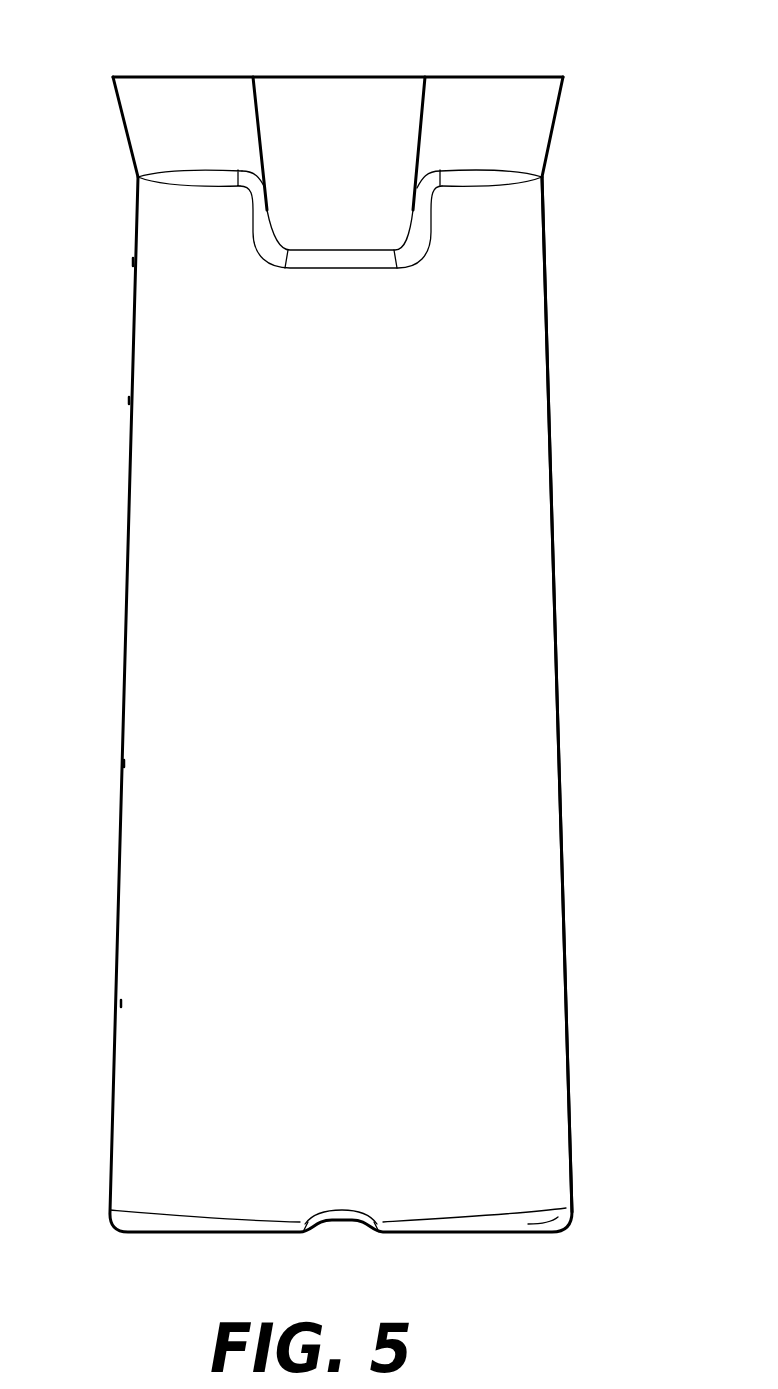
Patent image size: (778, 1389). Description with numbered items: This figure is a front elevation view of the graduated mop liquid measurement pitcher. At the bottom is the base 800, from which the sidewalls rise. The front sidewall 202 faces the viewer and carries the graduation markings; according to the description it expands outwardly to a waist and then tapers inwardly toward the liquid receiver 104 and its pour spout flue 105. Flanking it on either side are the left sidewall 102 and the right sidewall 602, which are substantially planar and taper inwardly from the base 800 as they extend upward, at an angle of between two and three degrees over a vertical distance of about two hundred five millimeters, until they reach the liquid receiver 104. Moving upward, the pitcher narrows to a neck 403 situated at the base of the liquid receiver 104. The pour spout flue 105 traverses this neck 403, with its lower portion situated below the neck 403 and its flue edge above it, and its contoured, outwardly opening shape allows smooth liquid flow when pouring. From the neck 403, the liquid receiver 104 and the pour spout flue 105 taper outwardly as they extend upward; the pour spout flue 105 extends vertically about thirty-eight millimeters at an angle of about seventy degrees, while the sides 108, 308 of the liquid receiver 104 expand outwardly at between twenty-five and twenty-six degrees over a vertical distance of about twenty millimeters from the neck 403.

The left sidewall 102 is at (128, 523).
The liquid receiver 104 is at (188, 62).
The pour spout flue 105 is at (355, 58).
The side of liquid receiver 108 is at (123, 122).
The side of liquid receiver 308 is at (555, 120).
The neck 403 is at (560, 181).
The right sidewall 602 is at (557, 714).
The front sidewall 202 is at (353, 828).
The base 800 is at (472, 1233).